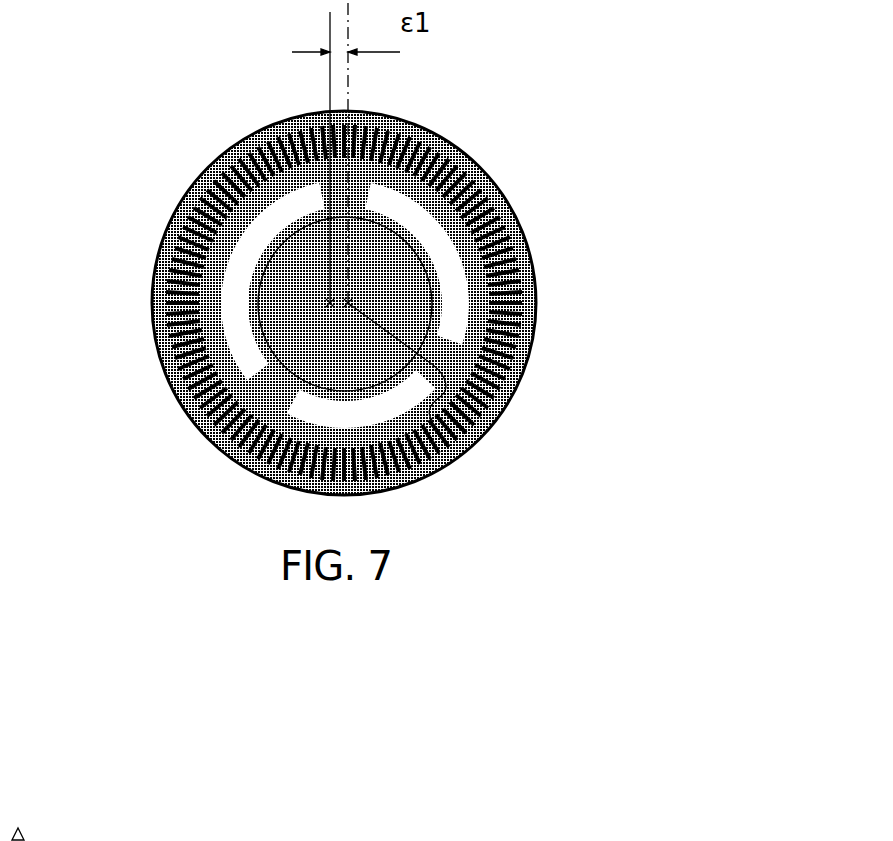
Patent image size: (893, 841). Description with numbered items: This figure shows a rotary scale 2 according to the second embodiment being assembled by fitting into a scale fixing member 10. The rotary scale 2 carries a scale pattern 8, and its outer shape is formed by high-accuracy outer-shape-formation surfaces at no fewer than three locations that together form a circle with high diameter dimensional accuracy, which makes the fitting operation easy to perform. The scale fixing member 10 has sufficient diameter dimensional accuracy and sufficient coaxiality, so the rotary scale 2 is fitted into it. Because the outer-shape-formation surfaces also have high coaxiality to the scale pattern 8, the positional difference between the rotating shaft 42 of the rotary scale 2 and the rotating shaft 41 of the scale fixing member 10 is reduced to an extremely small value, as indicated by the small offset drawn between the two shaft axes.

The rotary scale 2 is at (508, 198).
The scale pattern 8 is at (520, 305).
The scale fixing member 10 is at (305, 368).
The rotating shaft of the scale fixing member 41 is at (467, 452).
The rotating shaft of the rotary scale 42 is at (330, 303).